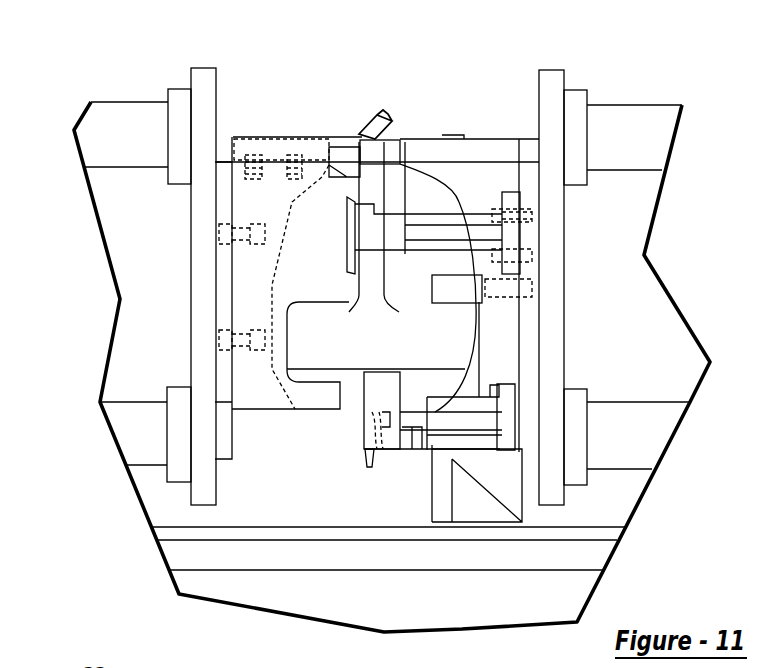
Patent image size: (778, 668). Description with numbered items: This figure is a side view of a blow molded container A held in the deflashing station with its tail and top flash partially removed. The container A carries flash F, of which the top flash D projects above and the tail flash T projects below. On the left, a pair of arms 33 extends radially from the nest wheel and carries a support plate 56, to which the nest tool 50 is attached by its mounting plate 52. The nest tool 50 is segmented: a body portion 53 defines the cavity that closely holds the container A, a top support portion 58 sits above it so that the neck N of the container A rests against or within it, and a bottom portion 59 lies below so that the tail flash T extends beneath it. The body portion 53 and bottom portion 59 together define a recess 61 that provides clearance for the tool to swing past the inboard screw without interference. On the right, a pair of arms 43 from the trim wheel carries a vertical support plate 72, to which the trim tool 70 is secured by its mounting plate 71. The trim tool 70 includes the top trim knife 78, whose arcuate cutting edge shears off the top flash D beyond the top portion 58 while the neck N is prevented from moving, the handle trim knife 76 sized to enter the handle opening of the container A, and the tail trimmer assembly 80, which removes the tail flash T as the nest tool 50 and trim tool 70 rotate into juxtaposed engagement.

The arm pair 33 is at (98, 137).
The arm pair 43 is at (627, 138).
The nest tool 50 is at (200, 283).
The mounting plate 52 is at (200, 255).
The body portion 53 is at (250, 282).
The support plate 56 is at (200, 218).
The top support portion 58 is at (325, 135).
The bottom portion 59 is at (250, 377).
The recess 61 is at (287, 340).
The trim tool 70 is at (583, 283).
The mounting plate 71 is at (528, 160).
The vertical support plate 72 is at (550, 240).
The handle trim knife 76 is at (473, 215).
The top trim knife 78 is at (430, 137).
The tail trimmer assembly 80 is at (348, 477).
The blow molded container A is at (460, 342).
The top flash D is at (382, 130).
The flash F is at (373, 135).
The neck N is at (387, 150).
The tail flash T is at (377, 457).